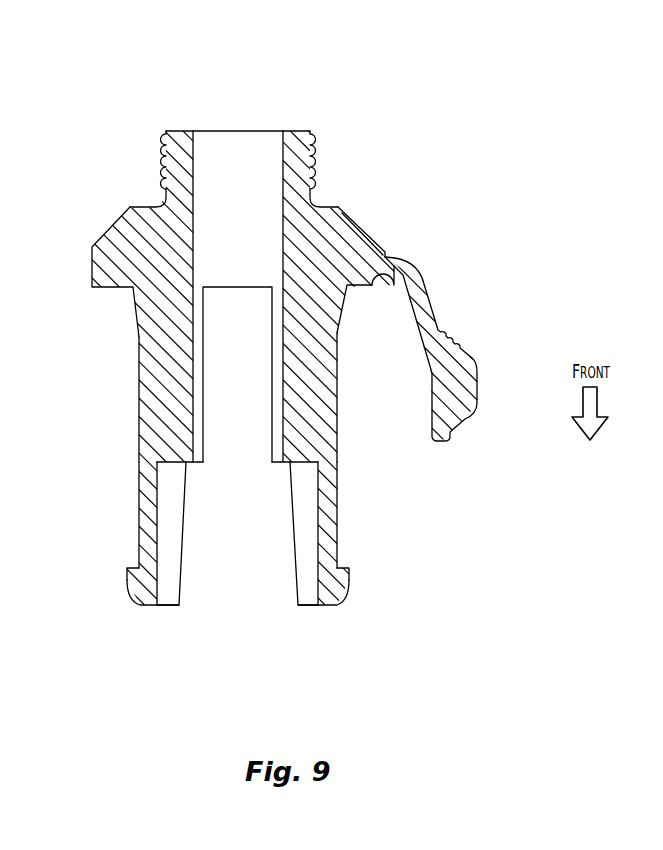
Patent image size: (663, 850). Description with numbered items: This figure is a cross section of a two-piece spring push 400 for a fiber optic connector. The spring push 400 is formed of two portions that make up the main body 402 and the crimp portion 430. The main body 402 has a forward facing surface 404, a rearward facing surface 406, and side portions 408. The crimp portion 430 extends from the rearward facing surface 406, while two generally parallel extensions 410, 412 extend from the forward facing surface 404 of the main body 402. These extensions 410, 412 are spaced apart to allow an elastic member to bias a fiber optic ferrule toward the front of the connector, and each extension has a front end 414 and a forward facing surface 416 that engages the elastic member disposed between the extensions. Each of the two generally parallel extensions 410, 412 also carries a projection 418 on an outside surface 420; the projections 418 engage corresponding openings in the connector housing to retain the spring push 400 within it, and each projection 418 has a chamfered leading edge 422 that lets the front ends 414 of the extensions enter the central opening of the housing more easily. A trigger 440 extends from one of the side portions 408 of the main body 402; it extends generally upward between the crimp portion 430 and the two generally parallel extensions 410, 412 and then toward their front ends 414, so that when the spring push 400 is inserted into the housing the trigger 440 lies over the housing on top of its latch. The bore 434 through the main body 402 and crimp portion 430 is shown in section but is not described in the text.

The spring push 400 is at (462, 117).
The main body 402 is at (380, 243).
The forward facing surface 404 is at (353, 289).
The rearward facing surface 406 is at (335, 204).
The side portions 408 is at (94, 244).
The generally parallel extension 410 is at (137, 514).
The generally parallel extension 412 is at (337, 500).
The front end 414 is at (166, 607).
The forward facing surface 416 is at (189, 466).
The projection 418 is at (129, 567).
The outside surface 420 is at (337, 455).
The chamfered leading edge 422 is at (136, 600).
The crimp portion 430 is at (165, 153).
The bore 434 is at (256, 150).
The trigger 440 is at (466, 420).